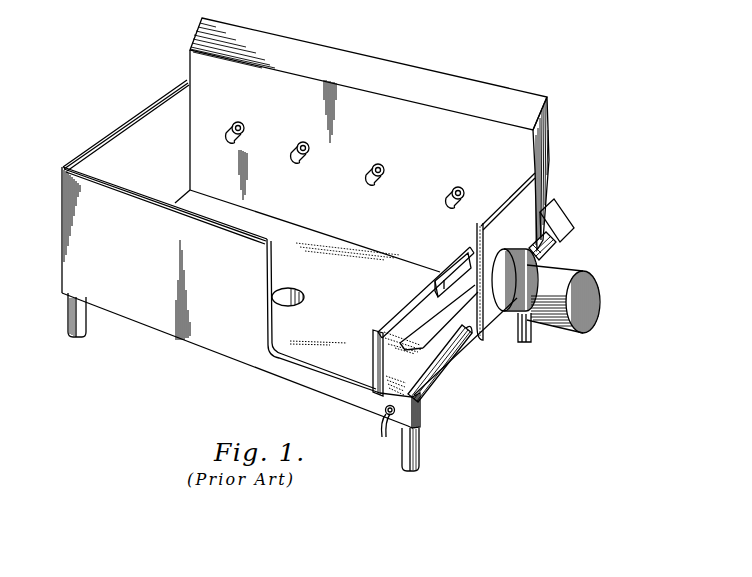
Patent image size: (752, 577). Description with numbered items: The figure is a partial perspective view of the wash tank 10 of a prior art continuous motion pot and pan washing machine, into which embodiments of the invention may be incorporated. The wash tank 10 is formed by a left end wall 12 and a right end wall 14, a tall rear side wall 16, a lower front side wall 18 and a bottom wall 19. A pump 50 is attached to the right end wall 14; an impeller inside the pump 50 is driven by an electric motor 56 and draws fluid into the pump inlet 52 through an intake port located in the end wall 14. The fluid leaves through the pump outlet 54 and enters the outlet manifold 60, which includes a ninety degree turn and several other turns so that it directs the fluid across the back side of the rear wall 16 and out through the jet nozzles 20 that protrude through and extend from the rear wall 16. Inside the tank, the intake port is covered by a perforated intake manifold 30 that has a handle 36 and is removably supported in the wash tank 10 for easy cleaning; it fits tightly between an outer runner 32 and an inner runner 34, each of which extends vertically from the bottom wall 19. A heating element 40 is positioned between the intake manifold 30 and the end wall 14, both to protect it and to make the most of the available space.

The wash tank 10 is at (112, 80).
The end wall 12 is at (113, 163).
The right end wall 14 is at (528, 193).
The rear side wall 16 is at (447, 133).
The front side wall 18 is at (155, 307).
The bottom wall 19 is at (283, 236).
The jet nozzles 20 is at (307, 140).
The intake manifold 30 is at (425, 293).
The outer runner 32 is at (375, 330).
The inner runner 34 is at (383, 395).
The handle 36 is at (452, 263).
The heating element 40 is at (452, 367).
The pump 50 is at (606, 304).
The pump inlet 52 is at (501, 311).
The pump outlet 54 is at (553, 254).
The electric motor 56 is at (557, 296).
The outlet manifold 60 is at (563, 229).